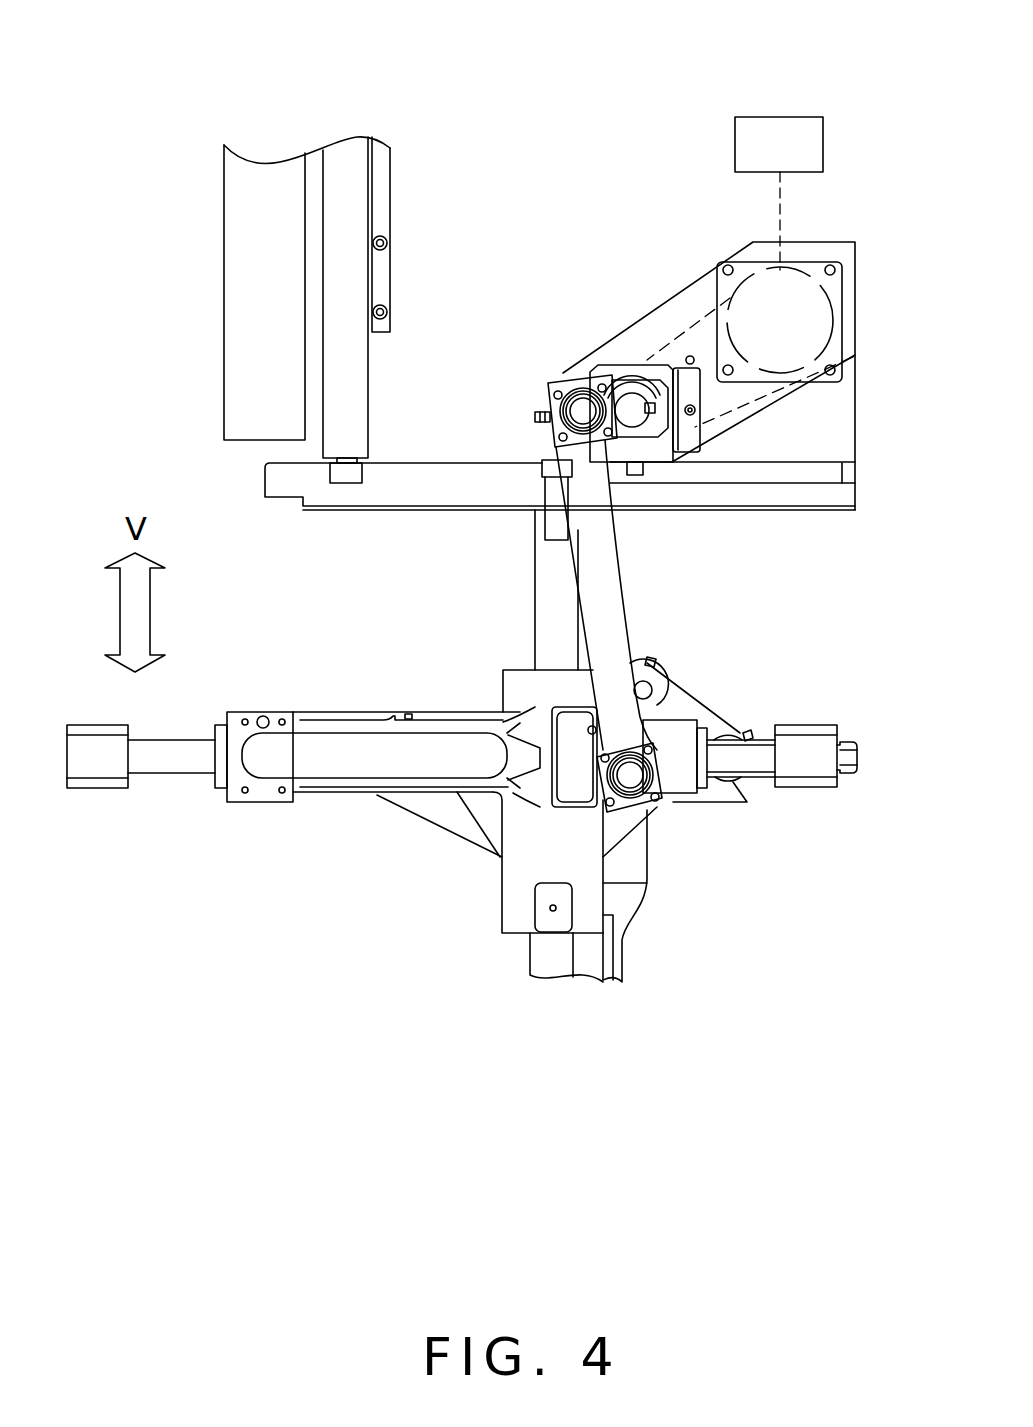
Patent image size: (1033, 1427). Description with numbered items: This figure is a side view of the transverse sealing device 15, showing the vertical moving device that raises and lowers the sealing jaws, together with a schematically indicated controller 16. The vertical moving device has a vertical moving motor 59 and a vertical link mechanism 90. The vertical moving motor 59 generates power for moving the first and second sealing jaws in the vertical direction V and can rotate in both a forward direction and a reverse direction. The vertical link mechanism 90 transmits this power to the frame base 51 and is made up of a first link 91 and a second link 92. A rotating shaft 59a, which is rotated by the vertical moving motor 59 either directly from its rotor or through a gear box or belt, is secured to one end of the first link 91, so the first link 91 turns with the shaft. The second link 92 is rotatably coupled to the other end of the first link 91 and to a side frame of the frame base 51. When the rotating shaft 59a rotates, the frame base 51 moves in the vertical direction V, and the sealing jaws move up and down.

The transverse sealing device 15 is at (517, 123).
The controller 16 is at (773, 140).
The frame base 51 is at (383, 762).
The vertical moving motor 59 is at (760, 307).
The rotating shaft 59a is at (634, 402).
The vertical link mechanism 90 is at (540, 348).
The first link 91 is at (630, 437).
The second link 92 is at (605, 612).